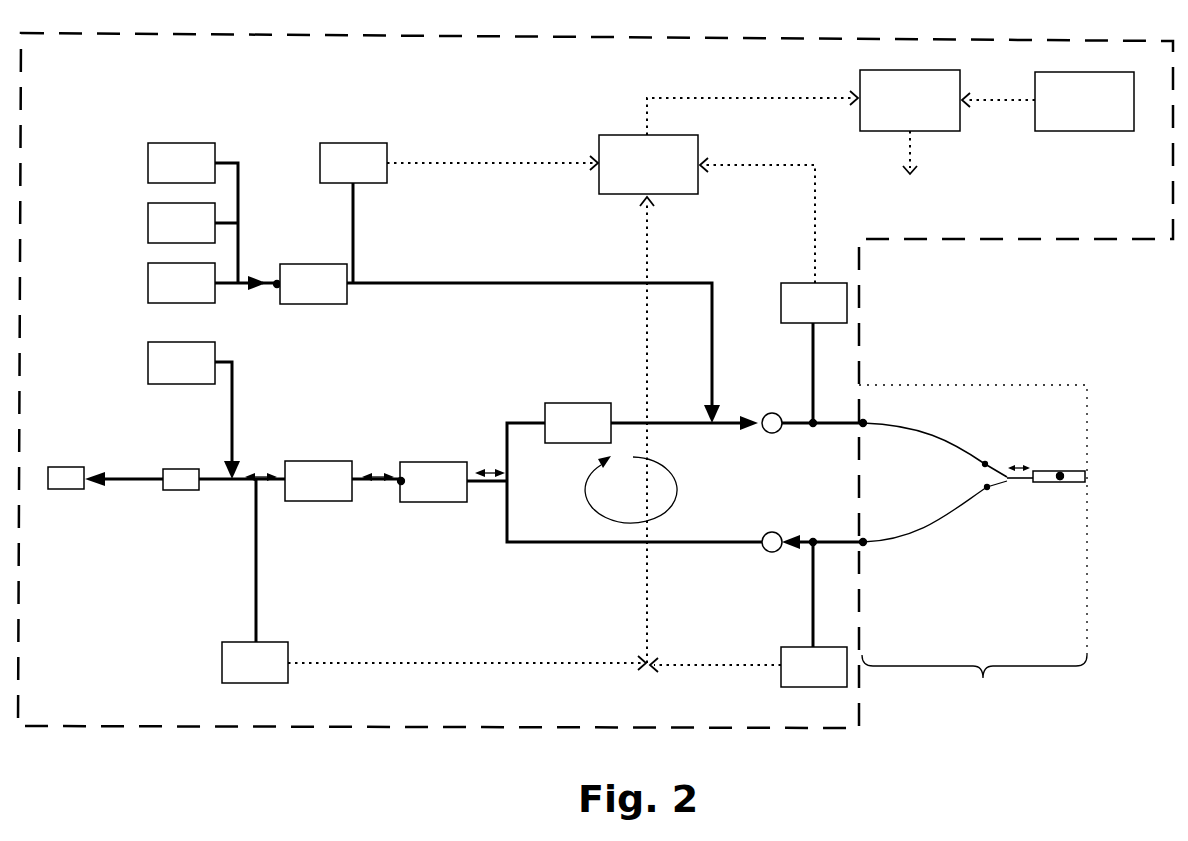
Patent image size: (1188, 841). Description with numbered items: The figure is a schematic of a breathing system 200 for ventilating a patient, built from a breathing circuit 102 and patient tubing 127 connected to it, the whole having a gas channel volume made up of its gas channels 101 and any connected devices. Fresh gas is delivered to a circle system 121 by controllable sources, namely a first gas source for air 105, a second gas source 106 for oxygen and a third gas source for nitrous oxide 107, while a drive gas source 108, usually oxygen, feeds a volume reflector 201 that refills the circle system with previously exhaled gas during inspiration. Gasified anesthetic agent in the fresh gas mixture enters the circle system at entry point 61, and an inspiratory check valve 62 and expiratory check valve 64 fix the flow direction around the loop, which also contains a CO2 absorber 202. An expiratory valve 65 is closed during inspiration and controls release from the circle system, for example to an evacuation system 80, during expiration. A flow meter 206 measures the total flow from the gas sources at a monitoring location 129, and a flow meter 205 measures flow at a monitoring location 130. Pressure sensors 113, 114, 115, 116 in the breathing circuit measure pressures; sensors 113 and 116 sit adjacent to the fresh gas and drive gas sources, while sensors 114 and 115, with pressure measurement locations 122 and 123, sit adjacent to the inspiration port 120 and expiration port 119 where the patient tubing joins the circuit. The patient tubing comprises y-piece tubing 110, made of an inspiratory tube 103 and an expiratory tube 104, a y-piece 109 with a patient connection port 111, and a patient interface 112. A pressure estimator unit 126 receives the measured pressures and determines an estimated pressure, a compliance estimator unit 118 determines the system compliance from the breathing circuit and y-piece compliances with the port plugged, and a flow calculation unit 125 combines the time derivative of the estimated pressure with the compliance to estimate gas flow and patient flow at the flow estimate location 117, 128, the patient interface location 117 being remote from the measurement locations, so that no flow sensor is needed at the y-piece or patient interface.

The evacuation system 80 is at (68, 467).
The expiratory valve 65 is at (181, 490).
The gas channels 101 is at (479, 268).
The breathing circuit 102 is at (392, 740).
The inspiratory tube 103 is at (948, 463).
The expiratory tube 104 is at (940, 503).
The first gas source for air 105 is at (193, 213).
The second gas source for oxygen 106 is at (193, 223).
The third gas source for nitrous oxide 107 is at (214, 273).
The drive gas source 108 is at (194, 410).
The y-piece 109 is at (997, 460).
The y-piece tubing 110 is at (968, 395).
The patient connection port 111 is at (1028, 492).
The patient interface 112 is at (1085, 476).
The pressure sensor 113 is at (459, 213).
The pressure sensor 114 is at (773, 277).
The pressure sensor 115 is at (748, 624).
The pressure sensor 116 is at (434, 593).
The patient interface location 117 is at (1062, 482).
The compliance estimator unit 118 is at (1048, 101).
The expiration port 119 is at (871, 555).
The inspiration port 120 is at (867, 405).
The circle system 121 is at (605, 573).
The pressure measurement location 122 is at (813, 444).
The pressure measurement location 123 is at (813, 527).
The flow calculation unit 125 is at (915, 140).
The pressure estimator unit 126 is at (689, 368).
The patient tubing 127 is at (974, 700).
The flow estimate location 128 is at (1060, 476).
The monitoring location 129 is at (276, 290).
The monitoring location 130 is at (401, 485).
The breathing system 200 is at (1042, 728).
The volume reflector 201 is at (322, 481).
The CO2 absorber 202 is at (651, 423).
The flow meter 205 is at (453, 496).
The flow meter 206 is at (313, 284).
The entry point 61 is at (712, 438).
The inspiratory check valve 62 is at (772, 412).
The expiratory check valve 64 is at (766, 553).